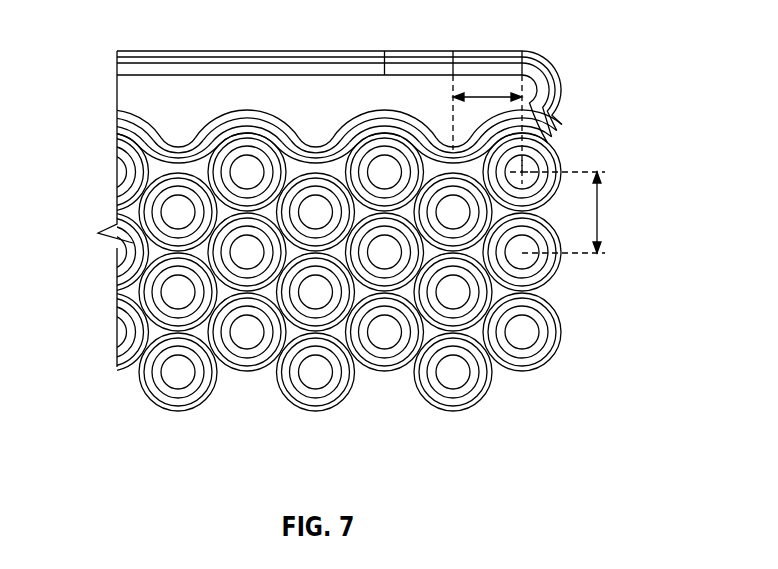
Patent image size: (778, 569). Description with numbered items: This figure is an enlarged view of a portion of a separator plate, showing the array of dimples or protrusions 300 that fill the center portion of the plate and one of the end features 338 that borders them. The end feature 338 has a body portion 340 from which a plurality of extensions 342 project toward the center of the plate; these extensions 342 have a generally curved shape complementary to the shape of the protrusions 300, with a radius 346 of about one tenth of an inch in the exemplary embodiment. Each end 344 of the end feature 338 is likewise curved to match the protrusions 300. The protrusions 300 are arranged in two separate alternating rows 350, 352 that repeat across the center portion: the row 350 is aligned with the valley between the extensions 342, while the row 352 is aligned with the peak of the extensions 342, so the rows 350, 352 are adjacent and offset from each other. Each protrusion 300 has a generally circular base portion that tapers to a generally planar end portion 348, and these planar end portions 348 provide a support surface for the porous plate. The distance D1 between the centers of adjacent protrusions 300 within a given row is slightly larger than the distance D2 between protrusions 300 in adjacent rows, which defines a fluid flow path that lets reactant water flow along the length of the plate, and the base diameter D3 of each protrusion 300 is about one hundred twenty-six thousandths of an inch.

The protrusions 300 is at (563, 342).
The end features 338 is at (375, 51).
The body portion 340 is at (233, 88).
The extensions 342 is at (315, 141).
The end 344 is at (535, 88).
The radius 346 is at (180, 150).
The planar end portion 348 is at (167, 292).
The row 350 is at (548, 383).
The row 352 is at (457, 435).
The distance D1 is at (597, 213).
The distance D2 is at (453, 107).
The base diameter D3 is at (558, 137).